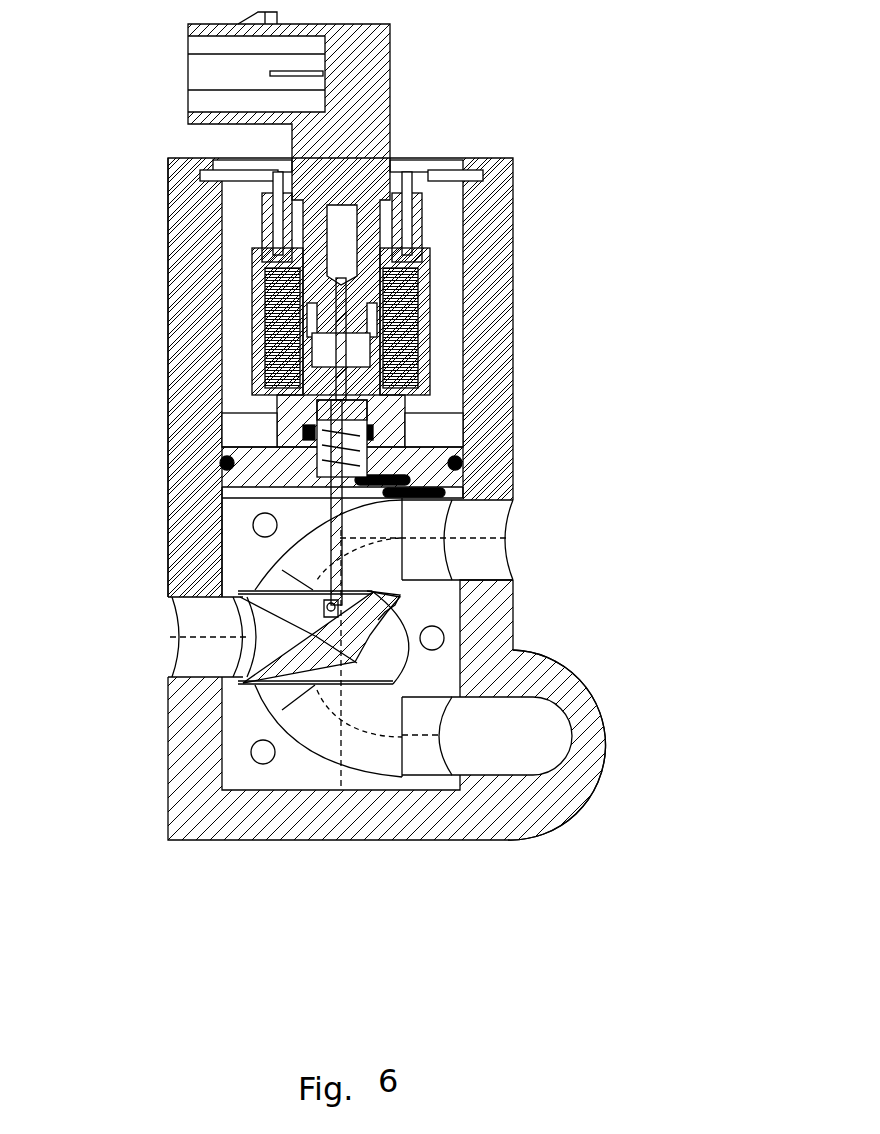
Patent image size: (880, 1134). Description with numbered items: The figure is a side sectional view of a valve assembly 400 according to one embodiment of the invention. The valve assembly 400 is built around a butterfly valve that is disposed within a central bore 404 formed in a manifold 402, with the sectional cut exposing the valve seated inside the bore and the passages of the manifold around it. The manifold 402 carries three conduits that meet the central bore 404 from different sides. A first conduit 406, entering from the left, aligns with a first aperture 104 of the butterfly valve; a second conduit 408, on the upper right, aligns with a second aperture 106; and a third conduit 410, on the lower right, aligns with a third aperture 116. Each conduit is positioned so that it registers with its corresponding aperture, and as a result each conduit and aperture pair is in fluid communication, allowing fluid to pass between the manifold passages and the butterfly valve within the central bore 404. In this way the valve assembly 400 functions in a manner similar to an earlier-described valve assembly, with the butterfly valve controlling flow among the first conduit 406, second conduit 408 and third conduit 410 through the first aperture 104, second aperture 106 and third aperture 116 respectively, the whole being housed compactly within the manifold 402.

The valve assembly 400 is at (598, 131).
The manifold 402 is at (168, 352).
The central bore 404 is at (207, 487).
The first aperture 104 is at (235, 610).
The first conduit 406 is at (183, 668).
The second aperture 106 is at (452, 513).
The second conduit 408 is at (510, 568).
The third conduit 410 is at (512, 762).
The third aperture 116 is at (458, 778).